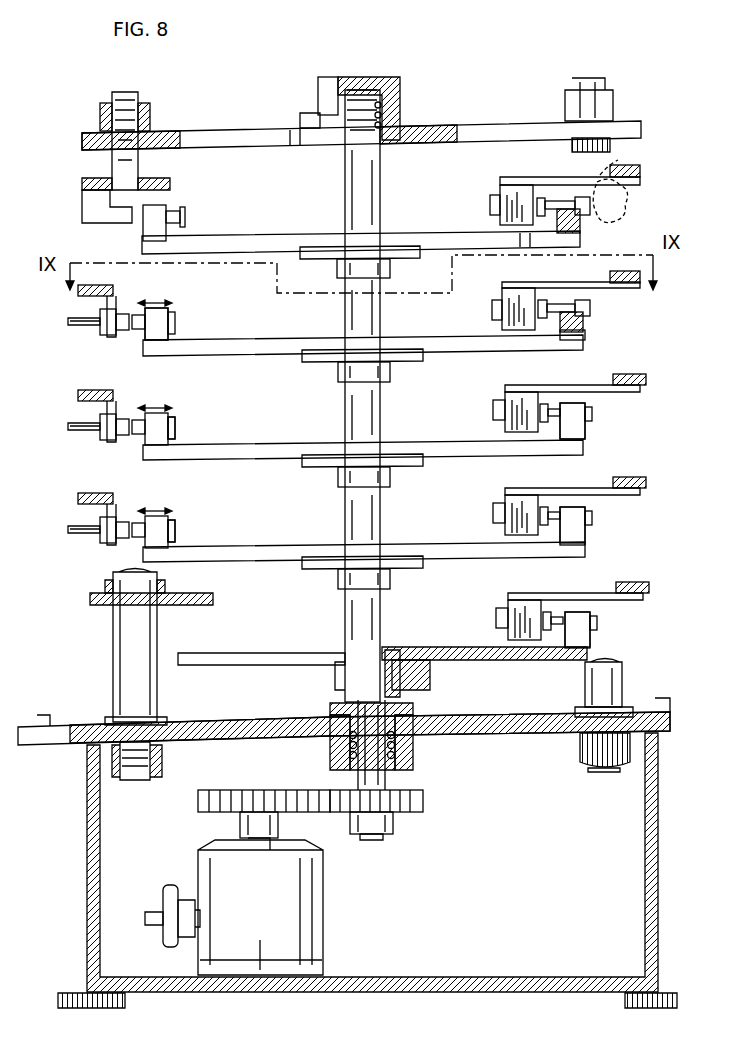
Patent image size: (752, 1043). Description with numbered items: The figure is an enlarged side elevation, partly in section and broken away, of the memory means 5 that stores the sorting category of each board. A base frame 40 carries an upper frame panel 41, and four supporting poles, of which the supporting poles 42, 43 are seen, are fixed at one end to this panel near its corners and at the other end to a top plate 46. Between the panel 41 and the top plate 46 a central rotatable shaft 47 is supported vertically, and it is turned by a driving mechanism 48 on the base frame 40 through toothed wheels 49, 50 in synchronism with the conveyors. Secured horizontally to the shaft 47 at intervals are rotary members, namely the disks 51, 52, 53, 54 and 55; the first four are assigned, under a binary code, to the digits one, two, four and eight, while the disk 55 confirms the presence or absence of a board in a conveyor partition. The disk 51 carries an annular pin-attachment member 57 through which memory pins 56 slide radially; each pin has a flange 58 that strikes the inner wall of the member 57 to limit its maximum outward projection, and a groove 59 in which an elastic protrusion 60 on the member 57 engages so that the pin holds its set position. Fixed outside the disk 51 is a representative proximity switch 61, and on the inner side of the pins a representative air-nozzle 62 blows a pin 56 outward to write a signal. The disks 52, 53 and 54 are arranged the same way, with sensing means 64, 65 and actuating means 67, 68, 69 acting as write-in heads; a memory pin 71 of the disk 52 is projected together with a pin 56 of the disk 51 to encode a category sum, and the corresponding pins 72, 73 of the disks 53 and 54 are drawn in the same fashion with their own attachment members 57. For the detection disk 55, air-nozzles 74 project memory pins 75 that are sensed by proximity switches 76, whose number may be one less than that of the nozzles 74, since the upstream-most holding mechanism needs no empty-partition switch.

The memory means 5 is at (224, 130).
The base frame 40 is at (87, 906).
The upper frame panel 41 is at (216, 721).
The supporting pole 42 is at (113, 645).
The supporting pole 43 is at (585, 686).
The top plate 46 is at (470, 121).
The rotatable shaft 47 is at (350, 416).
The driving mechanism 48 is at (322, 888).
The toothed wheel 49 is at (285, 812).
The toothed wheel 50 is at (400, 812).
The disk 51 is at (432, 340).
The disk 52 is at (437, 445).
The disk 53 is at (437, 547).
The disk 54 is at (438, 647).
The disk 55 is at (418, 236).
The memory pin 56 is at (172, 318).
The pin-attachment member 57 is at (585, 332).
The flange 58 is at (540, 198).
The groove 59 is at (563, 201).
The protrusion 60 is at (575, 215).
The proximity switch 61 is at (122, 315).
The air-nozzle 62 is at (520, 313).
The sensing means 64 is at (126, 420).
The sensing means 65 is at (126, 524).
The actuating means 67 is at (533, 412).
The actuating means 68 is at (533, 515).
The actuating means 69 is at (537, 618).
The memory pin 71 is at (172, 423).
The switch actuator 72 is at (175, 527).
The switch actuator 73 is at (597, 620).
The air-nozzle 74 is at (515, 200).
The memory pin 75 is at (590, 210).
The proximity switch 76 is at (616, 183).